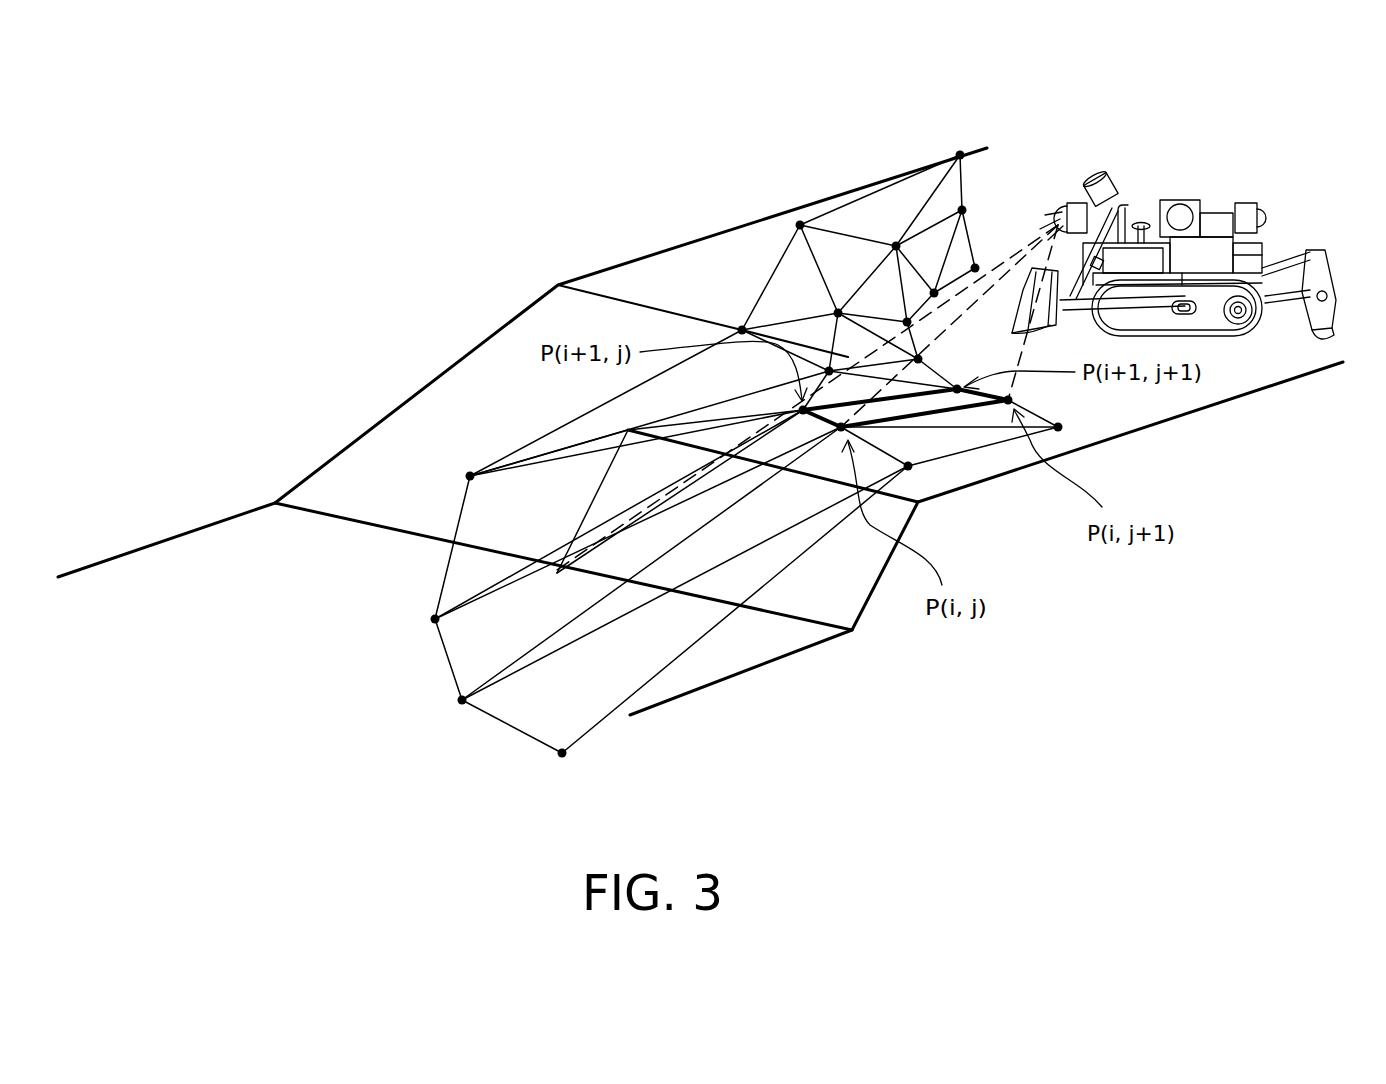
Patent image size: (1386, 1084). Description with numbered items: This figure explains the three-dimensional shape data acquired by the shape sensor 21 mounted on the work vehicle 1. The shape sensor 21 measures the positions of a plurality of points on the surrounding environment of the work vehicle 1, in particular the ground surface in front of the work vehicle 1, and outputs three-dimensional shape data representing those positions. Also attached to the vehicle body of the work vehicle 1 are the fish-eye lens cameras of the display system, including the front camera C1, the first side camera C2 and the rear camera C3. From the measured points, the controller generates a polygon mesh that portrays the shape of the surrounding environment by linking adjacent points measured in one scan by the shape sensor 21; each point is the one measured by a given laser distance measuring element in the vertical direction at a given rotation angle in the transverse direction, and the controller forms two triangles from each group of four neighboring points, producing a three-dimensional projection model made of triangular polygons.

The work vehicle 1 is at (1226, 182).
The shape sensor 21 is at (1089, 172).
The front camera C1 is at (1061, 202).
The first side camera C2 is at (1171, 200).
The rear camera C3 is at (1262, 203).